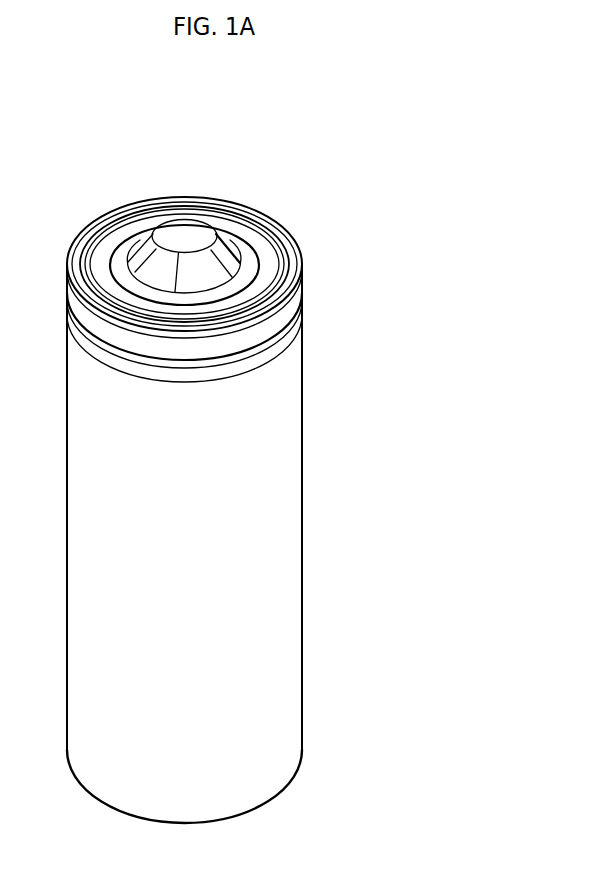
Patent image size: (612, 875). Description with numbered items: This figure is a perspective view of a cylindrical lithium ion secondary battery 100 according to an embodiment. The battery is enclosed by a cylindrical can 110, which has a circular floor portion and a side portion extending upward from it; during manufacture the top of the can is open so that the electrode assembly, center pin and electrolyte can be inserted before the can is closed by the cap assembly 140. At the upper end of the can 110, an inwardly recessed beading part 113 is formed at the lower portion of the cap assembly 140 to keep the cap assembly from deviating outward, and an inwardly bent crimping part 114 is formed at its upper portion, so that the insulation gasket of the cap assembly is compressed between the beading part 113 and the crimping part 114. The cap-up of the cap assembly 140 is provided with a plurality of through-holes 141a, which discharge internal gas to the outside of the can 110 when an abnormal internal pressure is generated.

The cylindrical lithium ion secondary battery 100 is at (62, 128).
The cylindrical can 110 is at (320, 538).
The beading part 113 is at (292, 333).
The crimping part 114 is at (290, 249).
The cap assembly 140 is at (185, 223).
The through-holes 141a is at (216, 272).